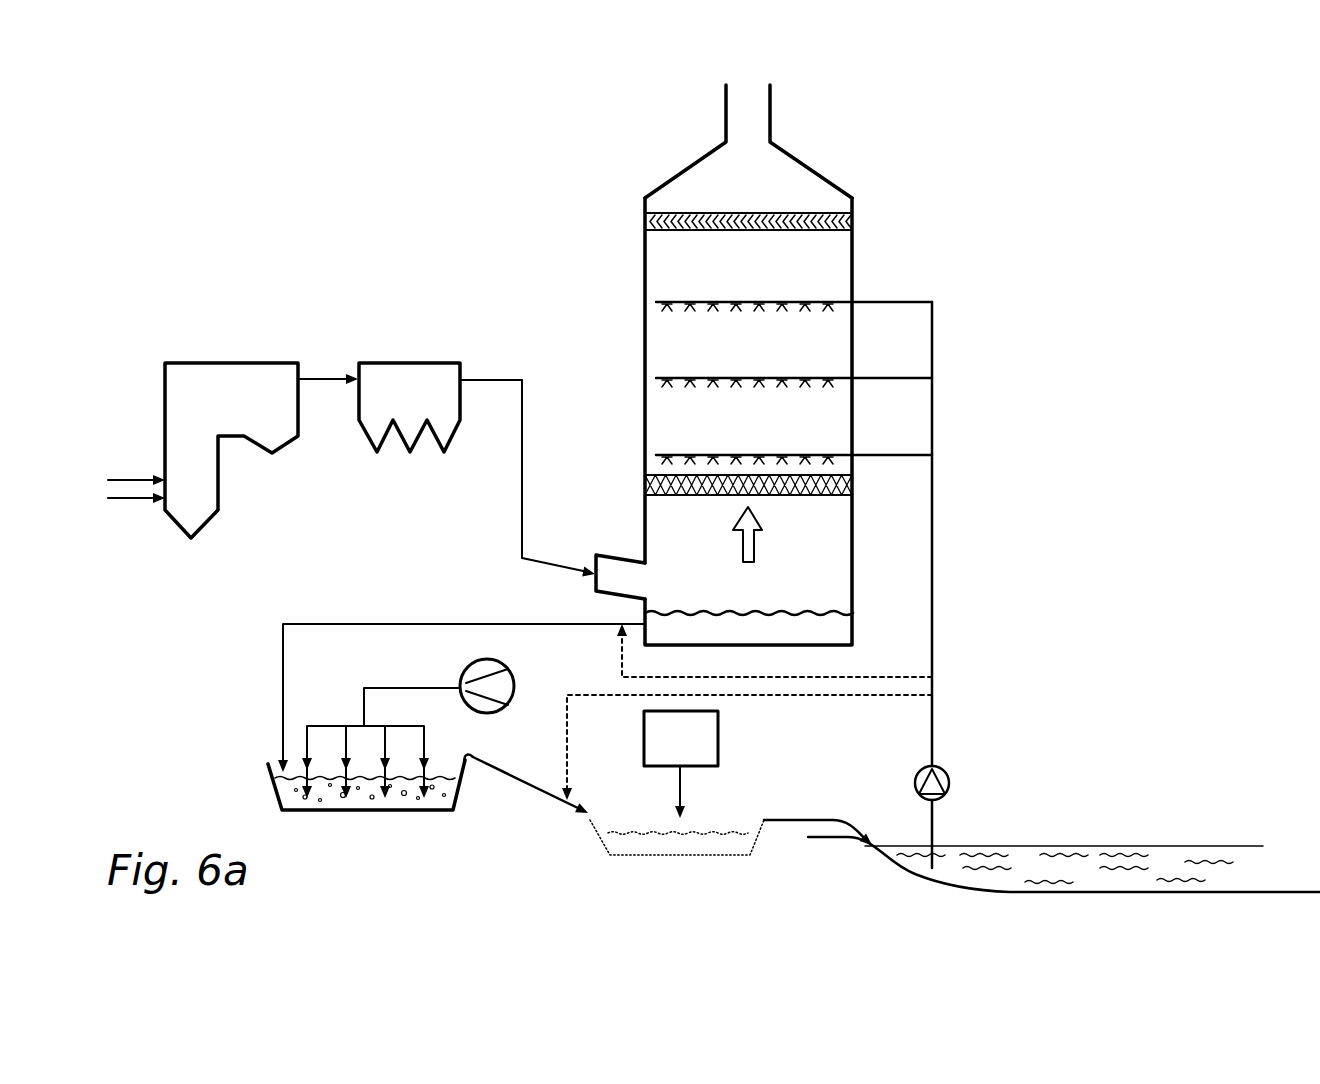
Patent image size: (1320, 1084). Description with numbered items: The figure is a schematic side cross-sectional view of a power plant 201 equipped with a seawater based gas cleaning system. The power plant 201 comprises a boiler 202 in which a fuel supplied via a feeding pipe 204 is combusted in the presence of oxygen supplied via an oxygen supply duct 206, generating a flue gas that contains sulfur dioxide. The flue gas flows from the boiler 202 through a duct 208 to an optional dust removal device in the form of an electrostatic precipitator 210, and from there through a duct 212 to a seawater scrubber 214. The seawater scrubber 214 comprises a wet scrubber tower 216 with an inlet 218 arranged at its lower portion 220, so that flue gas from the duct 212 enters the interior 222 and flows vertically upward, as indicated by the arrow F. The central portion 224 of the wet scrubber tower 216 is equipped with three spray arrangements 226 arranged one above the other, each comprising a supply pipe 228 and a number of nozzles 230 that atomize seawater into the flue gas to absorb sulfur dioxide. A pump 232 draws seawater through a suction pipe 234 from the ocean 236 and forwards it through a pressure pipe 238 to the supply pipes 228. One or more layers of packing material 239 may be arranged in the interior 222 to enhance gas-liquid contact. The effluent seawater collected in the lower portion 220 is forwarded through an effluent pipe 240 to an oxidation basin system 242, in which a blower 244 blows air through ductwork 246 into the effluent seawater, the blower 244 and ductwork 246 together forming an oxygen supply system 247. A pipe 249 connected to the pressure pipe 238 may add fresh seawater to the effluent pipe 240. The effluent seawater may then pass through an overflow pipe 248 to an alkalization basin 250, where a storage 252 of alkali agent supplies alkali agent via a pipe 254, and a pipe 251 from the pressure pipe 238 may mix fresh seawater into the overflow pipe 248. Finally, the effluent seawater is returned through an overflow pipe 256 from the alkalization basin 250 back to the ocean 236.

The power plant 201 is at (996, 168).
The boiler 202 is at (208, 372).
The feeding pipe 204 is at (108, 480).
The oxygen supply duct 206 is at (120, 500).
The duct 208 is at (330, 378).
The electrostatic precipitator 210 is at (418, 362).
The duct 212 is at (503, 380).
The seawater scrubber 214 is at (818, 176).
The wet scrubber tower 216 is at (855, 540).
The inlet 218 is at (617, 553).
The lower portion 220 is at (855, 590).
The interior 222 is at (670, 420).
The central portion 224 is at (645, 357).
The spray arrangements 226 is at (806, 294).
The supply pipe 228 is at (912, 301).
The nozzles 230 is at (656, 302).
The pump 232 is at (948, 780).
The suction pipe 234 is at (932, 826).
The ocean 236 is at (1150, 846).
The pressure pipe 238 is at (932, 583).
The packing material 239 is at (645, 487).
The effluent pipe 240 is at (460, 624).
The oxidation basin system 242 is at (360, 818).
The blower 244 is at (515, 676).
The ductwork 246 is at (333, 726).
The oxygen supply system 247 is at (403, 685).
The overflow pipe 248 is at (505, 770).
The pipe 249 is at (905, 677).
The alkalization basin 250 is at (688, 852).
The pipe 251 is at (880, 696).
The storage of alkali agent 252 is at (718, 733).
The pipe 254 is at (684, 786).
The overflow pipe 256 is at (808, 820).
The arrow indicating flue gas flow F is at (754, 543).